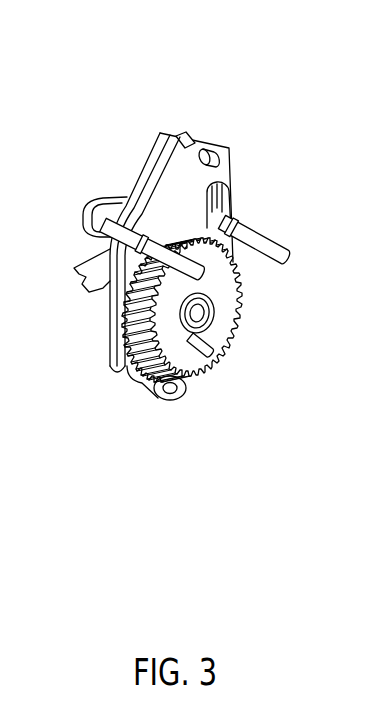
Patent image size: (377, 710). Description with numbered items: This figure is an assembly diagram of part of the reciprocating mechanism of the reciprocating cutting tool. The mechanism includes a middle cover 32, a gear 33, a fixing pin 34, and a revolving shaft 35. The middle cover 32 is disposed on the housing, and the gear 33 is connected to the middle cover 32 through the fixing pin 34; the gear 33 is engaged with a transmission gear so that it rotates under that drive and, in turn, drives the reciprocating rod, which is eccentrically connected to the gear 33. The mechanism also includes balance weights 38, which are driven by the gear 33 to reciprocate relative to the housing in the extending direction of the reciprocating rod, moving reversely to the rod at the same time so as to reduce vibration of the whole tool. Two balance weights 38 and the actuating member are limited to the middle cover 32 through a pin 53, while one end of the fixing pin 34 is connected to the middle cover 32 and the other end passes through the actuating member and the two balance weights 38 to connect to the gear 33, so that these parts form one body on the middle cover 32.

The middle cover 32 is at (160, 133).
The gear 33 is at (225, 310).
The fixing pin 34 is at (183, 315).
The revolving shaft 35 is at (203, 350).
The balance weights 38 is at (230, 165).
The pin 53 is at (252, 235).